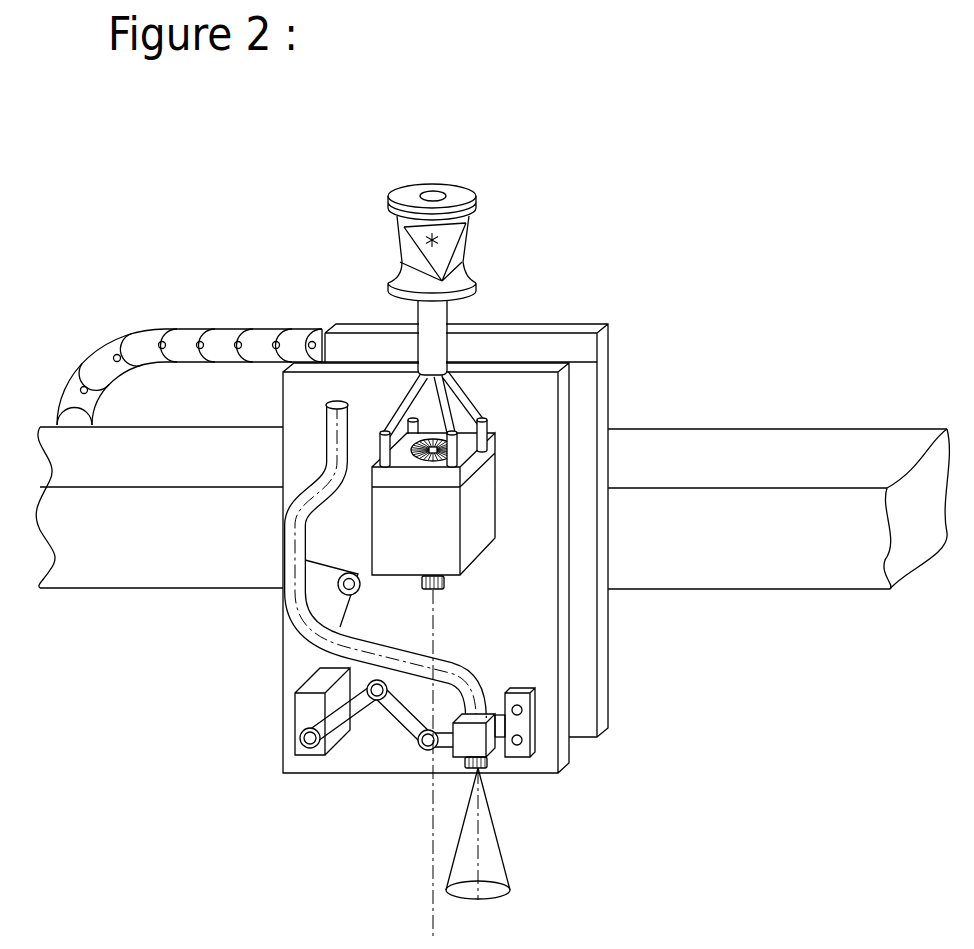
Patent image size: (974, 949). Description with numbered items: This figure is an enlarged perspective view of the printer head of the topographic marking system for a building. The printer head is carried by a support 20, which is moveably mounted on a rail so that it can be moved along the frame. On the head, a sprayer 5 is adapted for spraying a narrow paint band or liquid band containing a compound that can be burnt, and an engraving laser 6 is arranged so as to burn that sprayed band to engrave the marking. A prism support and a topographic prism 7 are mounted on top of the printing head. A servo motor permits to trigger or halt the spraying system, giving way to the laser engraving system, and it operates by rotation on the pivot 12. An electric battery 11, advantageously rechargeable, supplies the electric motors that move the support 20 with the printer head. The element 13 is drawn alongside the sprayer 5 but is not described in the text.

The topographic prism 7 is at (460, 255).
The engraving laser 6 is at (476, 510).
The support 20 is at (603, 655).
The pivot 12 is at (332, 588).
The electric battery 11 is at (297, 724).
The holder 13 is at (518, 725).
The sprayer 5 is at (480, 770).